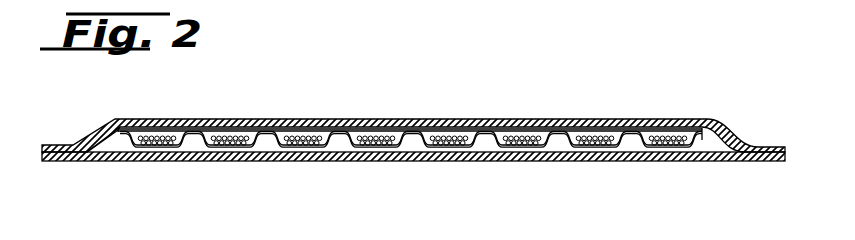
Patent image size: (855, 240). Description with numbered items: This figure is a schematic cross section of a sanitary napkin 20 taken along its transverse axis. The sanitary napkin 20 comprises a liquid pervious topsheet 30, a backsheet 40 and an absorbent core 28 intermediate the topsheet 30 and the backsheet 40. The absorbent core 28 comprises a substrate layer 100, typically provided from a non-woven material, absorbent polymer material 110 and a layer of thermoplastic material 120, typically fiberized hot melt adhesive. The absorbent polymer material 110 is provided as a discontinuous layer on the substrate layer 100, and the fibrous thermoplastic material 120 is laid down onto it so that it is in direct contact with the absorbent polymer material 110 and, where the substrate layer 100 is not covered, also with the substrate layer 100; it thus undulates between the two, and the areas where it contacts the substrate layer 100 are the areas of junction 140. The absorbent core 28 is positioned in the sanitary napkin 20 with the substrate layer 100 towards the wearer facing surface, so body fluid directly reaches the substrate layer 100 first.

The sanitary napkin 20 is at (722, 98).
The absorbent core 28 is at (114, 141).
The liquid pervious topsheet 30 is at (523, 121).
The backsheet 40 is at (704, 162).
The substrate layer 100 is at (410, 128).
The absorbent polymer material 110 is at (297, 147).
The layer of thermoplastic material 120 is at (473, 148).
The areas of junction 140 is at (412, 141).